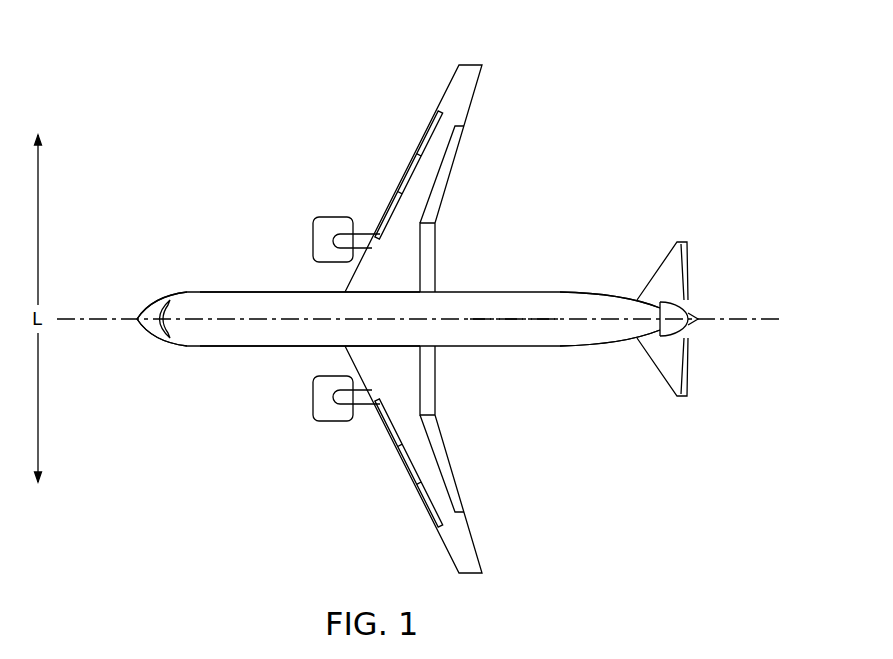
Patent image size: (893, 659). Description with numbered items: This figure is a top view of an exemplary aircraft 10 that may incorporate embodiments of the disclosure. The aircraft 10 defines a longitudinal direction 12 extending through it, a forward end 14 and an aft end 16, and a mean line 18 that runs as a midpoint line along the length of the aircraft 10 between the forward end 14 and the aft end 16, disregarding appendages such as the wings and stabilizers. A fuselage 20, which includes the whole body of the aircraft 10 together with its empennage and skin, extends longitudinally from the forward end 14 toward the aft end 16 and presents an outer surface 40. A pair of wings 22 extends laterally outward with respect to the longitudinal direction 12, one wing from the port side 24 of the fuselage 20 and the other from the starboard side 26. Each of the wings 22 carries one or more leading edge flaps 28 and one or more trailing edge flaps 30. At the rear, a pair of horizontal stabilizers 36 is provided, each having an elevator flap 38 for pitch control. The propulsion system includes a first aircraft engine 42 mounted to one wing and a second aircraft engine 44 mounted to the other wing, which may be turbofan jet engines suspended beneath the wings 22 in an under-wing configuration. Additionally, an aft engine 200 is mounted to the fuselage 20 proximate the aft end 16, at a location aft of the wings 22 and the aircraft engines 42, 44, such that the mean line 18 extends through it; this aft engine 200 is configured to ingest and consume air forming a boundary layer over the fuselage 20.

The aircraft 10 is at (580, 144).
The longitudinal direction 12 is at (70, 317).
The forward end 14 is at (135, 336).
The aft end 16 is at (718, 359).
The mean line 18 is at (191, 316).
The fuselage 20 is at (184, 338).
The wings 22 is at (465, 83).
The port side 24 is at (247, 361).
The starboard side 26 is at (247, 281).
The leading edge flaps 28 is at (405, 470).
The trailing edge flaps 30 is at (453, 472).
The horizontal stabilizers 36 is at (670, 258).
The elevator flap 38 is at (688, 258).
The outer surface 40 is at (527, 333).
The first aircraft engine 42 is at (324, 440).
The second aircraft engine 44 is at (323, 203).
The aft engine 200 is at (695, 292).